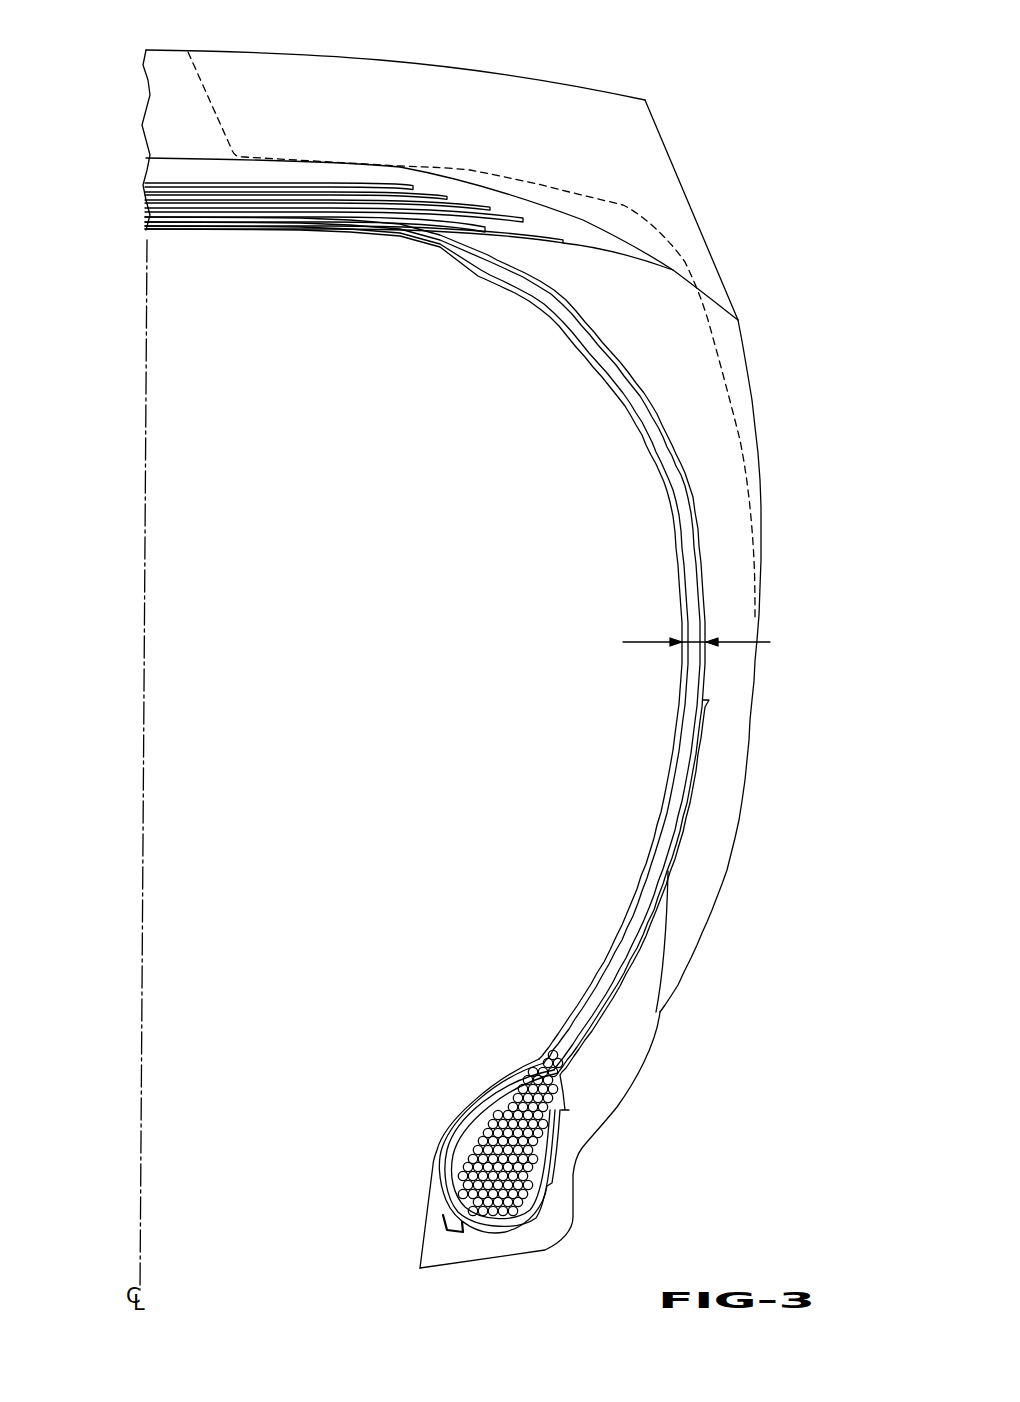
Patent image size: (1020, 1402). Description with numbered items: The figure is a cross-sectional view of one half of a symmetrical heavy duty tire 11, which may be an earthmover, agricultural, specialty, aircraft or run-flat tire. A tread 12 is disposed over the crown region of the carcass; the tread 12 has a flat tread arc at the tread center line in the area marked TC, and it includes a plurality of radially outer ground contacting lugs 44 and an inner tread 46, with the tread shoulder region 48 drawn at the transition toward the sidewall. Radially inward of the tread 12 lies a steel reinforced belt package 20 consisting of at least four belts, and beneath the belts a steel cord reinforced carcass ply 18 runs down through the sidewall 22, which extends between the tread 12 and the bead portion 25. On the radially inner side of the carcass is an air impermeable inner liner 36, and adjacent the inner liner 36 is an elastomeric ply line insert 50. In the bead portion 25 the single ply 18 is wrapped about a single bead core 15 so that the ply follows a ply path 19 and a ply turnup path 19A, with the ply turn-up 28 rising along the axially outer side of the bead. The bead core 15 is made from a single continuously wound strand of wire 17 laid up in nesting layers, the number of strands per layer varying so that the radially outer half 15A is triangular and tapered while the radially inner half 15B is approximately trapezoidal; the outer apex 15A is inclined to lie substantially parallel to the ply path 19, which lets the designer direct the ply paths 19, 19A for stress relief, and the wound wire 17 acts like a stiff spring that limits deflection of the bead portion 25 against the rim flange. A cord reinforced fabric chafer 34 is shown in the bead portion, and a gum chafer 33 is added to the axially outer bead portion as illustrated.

The tread center area TC is at (152, 57).
The tire 11 is at (770, 265).
The tread 12 is at (512, 100).
The bead core 15 is at (485, 1136).
The radially outer half of the bead core 15A is at (527, 1080).
The radially inner half of the bead core 15B is at (463, 1193).
The wire 17 is at (533, 1163).
The carcass ply 18 is at (682, 503).
The ply path 19 is at (680, 807).
The ply turnup path 19A is at (693, 770).
The belt package 20 is at (330, 200).
The sidewall 22 is at (732, 457).
The bead portion 25 is at (617, 1107).
The ply turn-up 28 is at (627, 943).
The gum chafer 33 is at (607, 1042).
The fabric chafer 34 is at (477, 1233).
The inner liner 36 is at (677, 737).
The ground contacting lugs 44 is at (375, 88).
The inner tread 46 is at (440, 167).
The shoulder 48 is at (578, 83).
The ply line insert 50 is at (695, 640).